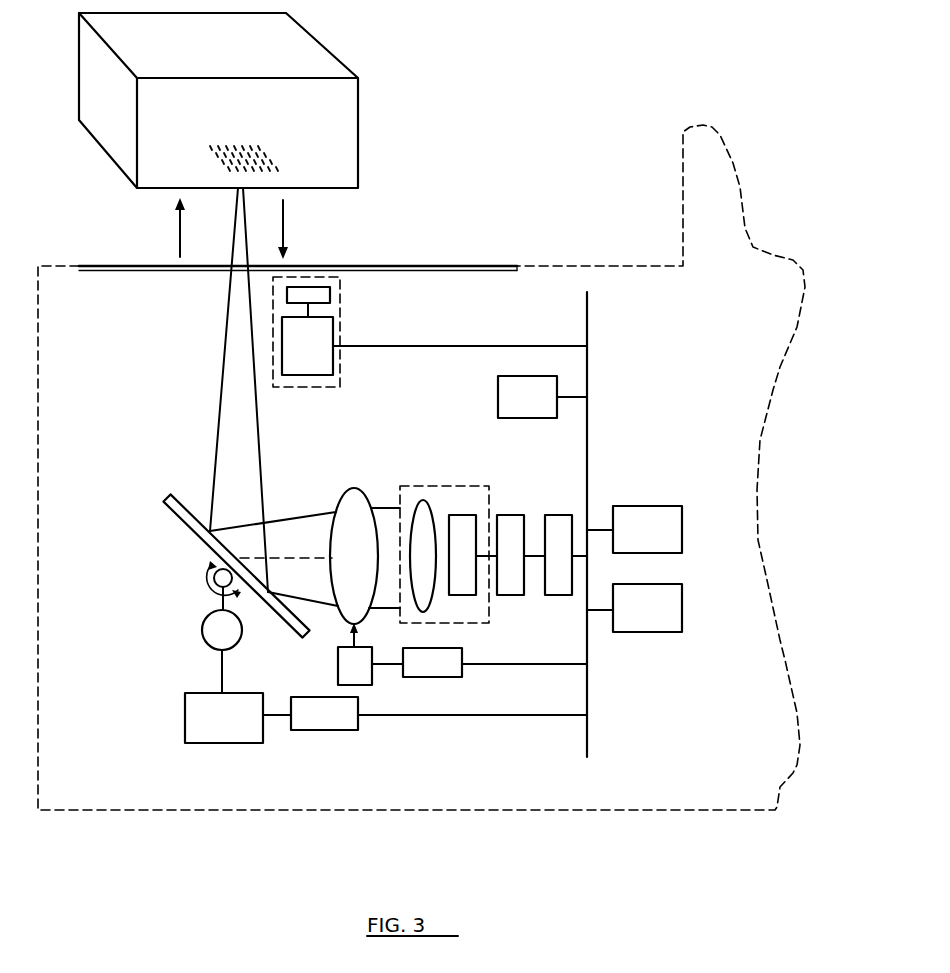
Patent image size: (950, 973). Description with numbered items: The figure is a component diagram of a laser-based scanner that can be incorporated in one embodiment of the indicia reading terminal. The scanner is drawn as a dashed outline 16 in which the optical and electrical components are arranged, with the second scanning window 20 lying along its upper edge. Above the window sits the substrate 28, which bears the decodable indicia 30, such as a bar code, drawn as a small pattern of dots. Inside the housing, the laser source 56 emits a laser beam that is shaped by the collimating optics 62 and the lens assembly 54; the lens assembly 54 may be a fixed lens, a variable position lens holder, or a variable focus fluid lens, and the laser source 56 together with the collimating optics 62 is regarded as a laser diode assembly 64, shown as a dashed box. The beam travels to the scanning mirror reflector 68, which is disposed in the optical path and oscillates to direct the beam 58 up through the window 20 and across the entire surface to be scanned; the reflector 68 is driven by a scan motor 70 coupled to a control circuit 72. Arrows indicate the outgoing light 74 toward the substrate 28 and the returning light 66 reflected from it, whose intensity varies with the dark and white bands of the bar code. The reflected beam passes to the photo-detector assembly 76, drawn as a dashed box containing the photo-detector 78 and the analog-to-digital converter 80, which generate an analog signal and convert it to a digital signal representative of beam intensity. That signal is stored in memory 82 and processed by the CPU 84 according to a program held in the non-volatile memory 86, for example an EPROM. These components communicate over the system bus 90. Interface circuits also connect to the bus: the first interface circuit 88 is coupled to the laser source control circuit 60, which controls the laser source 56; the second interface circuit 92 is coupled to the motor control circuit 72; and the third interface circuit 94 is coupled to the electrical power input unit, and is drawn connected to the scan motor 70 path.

The reader housing 16 is at (656, 265).
The second scanning window 20 is at (365, 266).
The substrate 28 is at (108, 128).
The decodable indicia 30 is at (262, 137).
The lens assembly 54 is at (354, 489).
The laser source 56 is at (458, 513).
The light beam 58 is at (240, 395).
The laser source control circuit 60 is at (508, 513).
The collimating optics 62 is at (423, 500).
The laser diode assembly 64 is at (462, 623).
The reflected light 66 is at (162, 227).
The scanning mirror reflector 68 is at (180, 498).
The scan motor 70 is at (202, 623).
The control circuit 72 is at (238, 696).
The illumination light 74 is at (301, 229).
The photo-detector assembly 76 is at (340, 383).
The photo-detector 78 is at (331, 298).
The analog-to-digital converter 80 is at (434, 346).
The memory 82 is at (634, 529).
The CPU 84 is at (542, 397).
The non-volatile memory 86 is at (634, 608).
The first interface circuit 88 is at (558, 514).
The system bus 90 is at (587, 313).
The second interface circuit 92 is at (439, 713).
The third interface circuit 94 is at (479, 662).